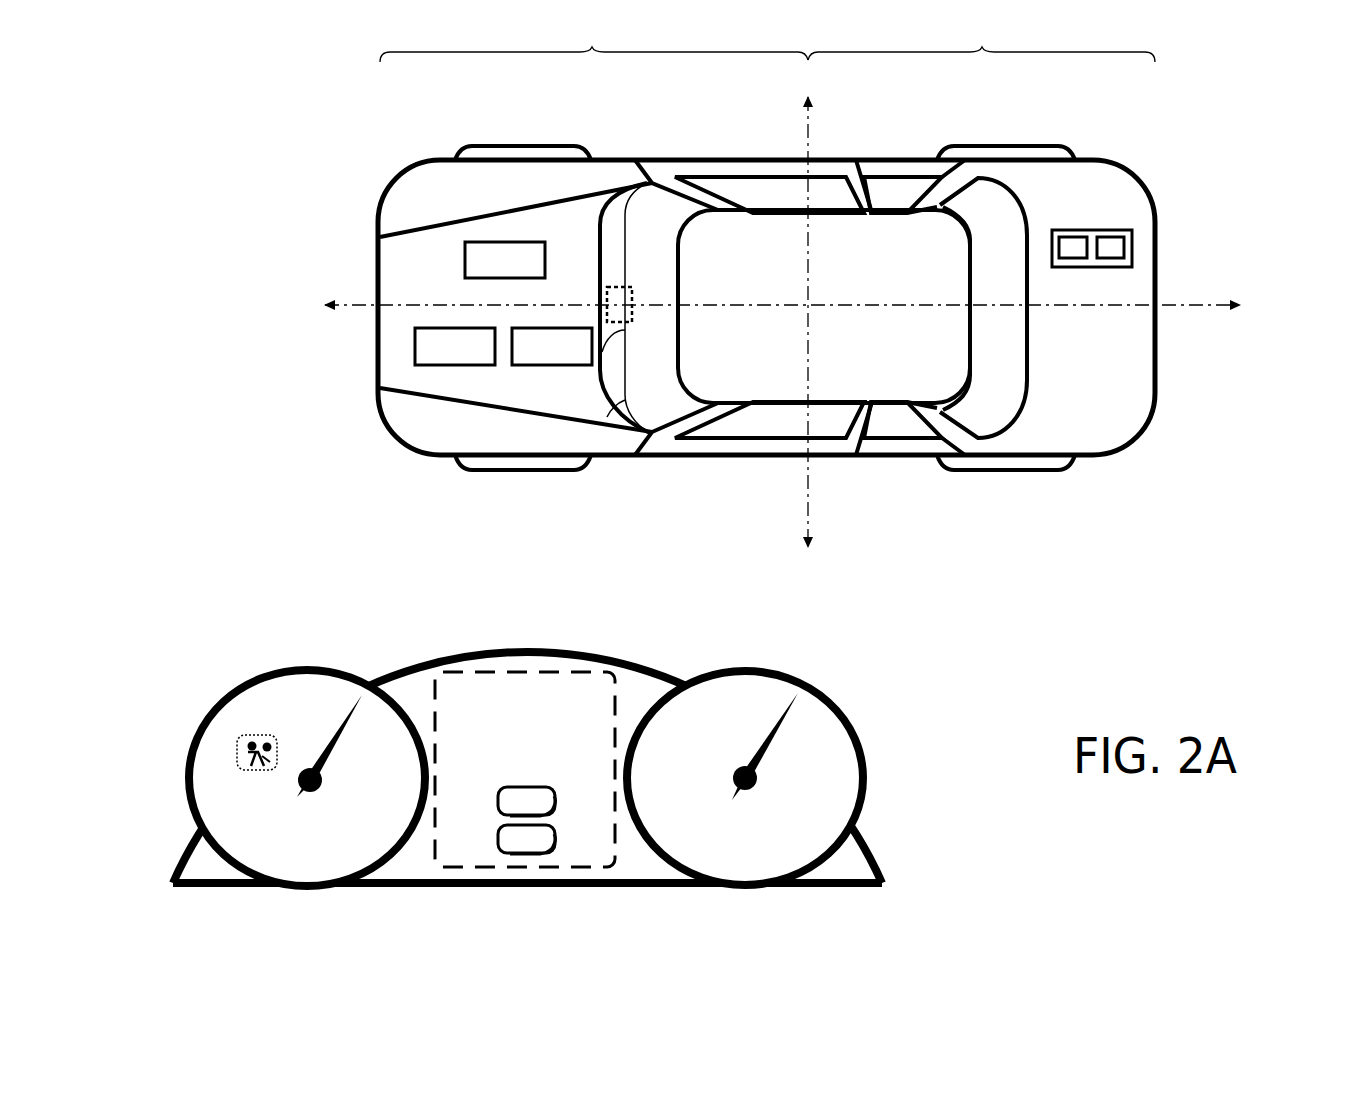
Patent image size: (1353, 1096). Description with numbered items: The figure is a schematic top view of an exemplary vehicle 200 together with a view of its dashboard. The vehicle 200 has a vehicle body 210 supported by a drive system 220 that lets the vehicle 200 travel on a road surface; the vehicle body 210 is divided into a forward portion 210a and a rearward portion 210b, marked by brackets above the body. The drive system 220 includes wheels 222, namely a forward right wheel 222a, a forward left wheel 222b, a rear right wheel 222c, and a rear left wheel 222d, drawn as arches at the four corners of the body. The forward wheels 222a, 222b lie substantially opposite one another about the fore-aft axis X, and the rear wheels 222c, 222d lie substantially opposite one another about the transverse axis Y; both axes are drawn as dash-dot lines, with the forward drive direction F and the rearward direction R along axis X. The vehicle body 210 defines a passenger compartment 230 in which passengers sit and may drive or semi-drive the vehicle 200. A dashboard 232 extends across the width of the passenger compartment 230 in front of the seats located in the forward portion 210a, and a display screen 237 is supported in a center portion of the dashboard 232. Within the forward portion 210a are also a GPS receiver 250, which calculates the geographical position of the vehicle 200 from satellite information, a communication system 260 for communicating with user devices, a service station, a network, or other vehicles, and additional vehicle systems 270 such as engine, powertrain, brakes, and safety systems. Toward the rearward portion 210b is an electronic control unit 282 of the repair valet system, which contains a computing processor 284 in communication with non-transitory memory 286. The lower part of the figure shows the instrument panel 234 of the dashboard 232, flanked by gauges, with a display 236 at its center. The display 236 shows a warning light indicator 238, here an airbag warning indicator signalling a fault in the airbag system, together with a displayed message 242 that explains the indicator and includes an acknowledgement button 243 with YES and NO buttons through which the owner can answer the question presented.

The vehicle 200 is at (418, 133).
The vehicle body 210 is at (397, 178).
The forward portion 210a is at (594, 39).
The rearward portion 210b is at (981, 39).
The drive system 220 is at (765, 310).
The wheels 222 is at (765, 310).
The forward right wheel 222a is at (528, 146).
The forward left wheel 222b is at (535, 470).
The rear right wheel 222c is at (1003, 146).
The rear left wheel 222d is at (1012, 470).
The passenger compartment 230 is at (824, 306).
The dashboard 232 is at (613, 253).
The instrument panel 234 is at (443, 647).
The display 236 is at (467, 867).
The display screen 237 is at (645, 278).
The warning light indicator 238 is at (237, 752).
The displayed message 242 is at (603, 698).
The acknowledgement button 243 is at (530, 853).
The GPS receiver 250 is at (505, 260).
The communication system 260 is at (455, 346).
The vehicle systems 270 is at (552, 346).
The electronic control unit 282 is at (1092, 230).
The computing processor 284 is at (1070, 258).
The non-transitory memory 286 is at (1112, 258).